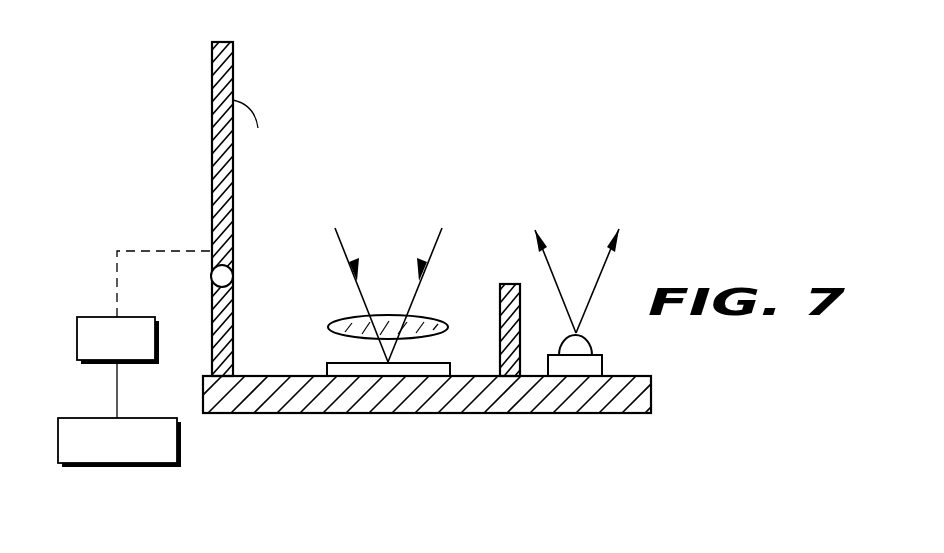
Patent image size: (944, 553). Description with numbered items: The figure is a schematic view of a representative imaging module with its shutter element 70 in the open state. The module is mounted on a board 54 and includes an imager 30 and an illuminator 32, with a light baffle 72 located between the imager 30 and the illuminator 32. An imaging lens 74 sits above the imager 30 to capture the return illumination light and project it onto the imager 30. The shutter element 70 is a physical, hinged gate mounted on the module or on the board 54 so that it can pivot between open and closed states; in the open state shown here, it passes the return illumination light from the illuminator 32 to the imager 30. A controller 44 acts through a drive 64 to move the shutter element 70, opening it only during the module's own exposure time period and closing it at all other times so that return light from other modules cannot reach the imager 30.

The shutter element 70 is at (212, 65).
The light baffle 72 is at (500, 302).
The imaging lens 74 is at (345, 320).
The imager 30 is at (389, 365).
The illuminator 32 is at (577, 365).
The board 54 is at (256, 400).
The drive 64 is at (88, 317).
The controller 44 is at (88, 418).